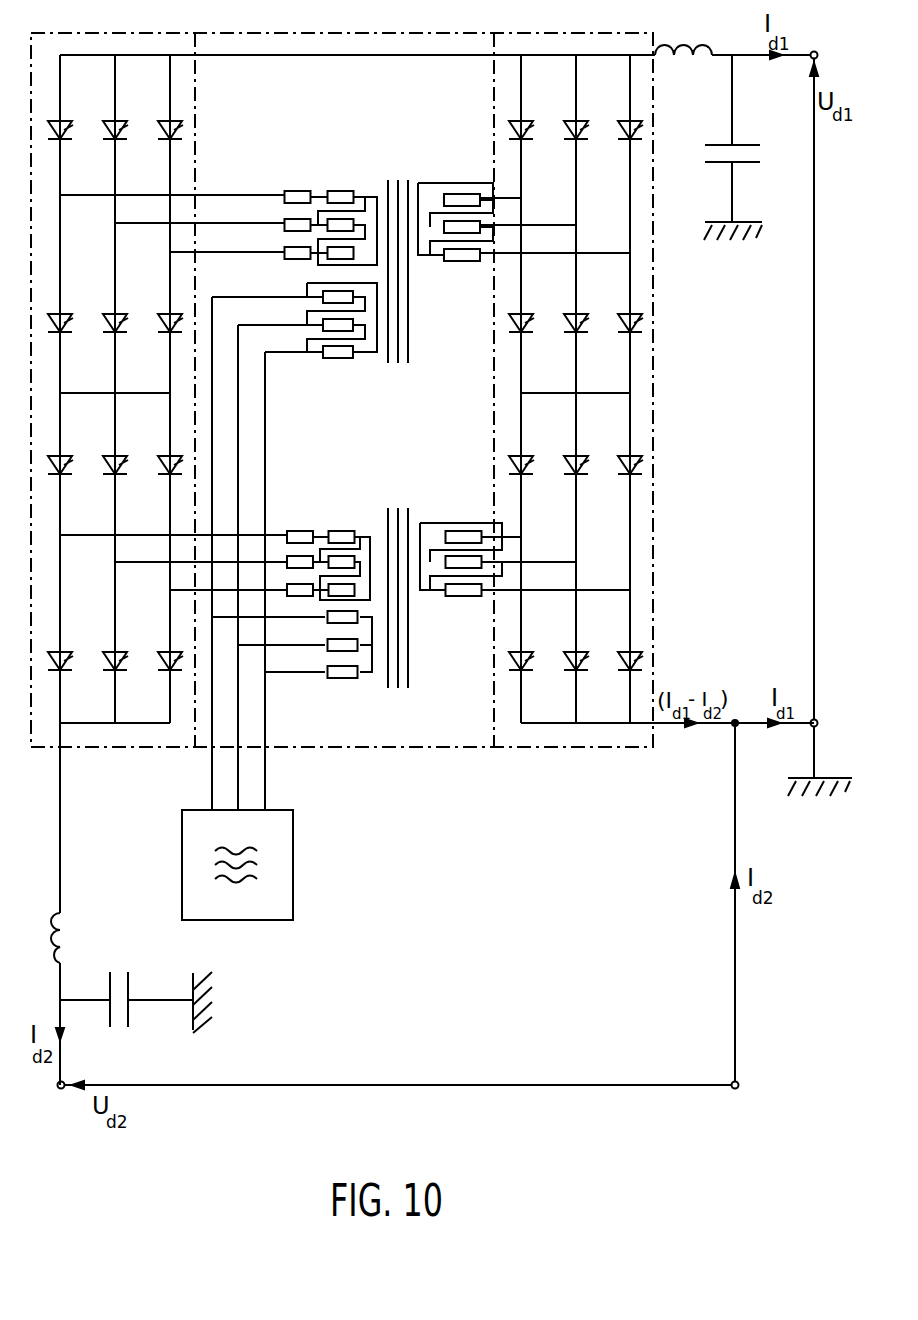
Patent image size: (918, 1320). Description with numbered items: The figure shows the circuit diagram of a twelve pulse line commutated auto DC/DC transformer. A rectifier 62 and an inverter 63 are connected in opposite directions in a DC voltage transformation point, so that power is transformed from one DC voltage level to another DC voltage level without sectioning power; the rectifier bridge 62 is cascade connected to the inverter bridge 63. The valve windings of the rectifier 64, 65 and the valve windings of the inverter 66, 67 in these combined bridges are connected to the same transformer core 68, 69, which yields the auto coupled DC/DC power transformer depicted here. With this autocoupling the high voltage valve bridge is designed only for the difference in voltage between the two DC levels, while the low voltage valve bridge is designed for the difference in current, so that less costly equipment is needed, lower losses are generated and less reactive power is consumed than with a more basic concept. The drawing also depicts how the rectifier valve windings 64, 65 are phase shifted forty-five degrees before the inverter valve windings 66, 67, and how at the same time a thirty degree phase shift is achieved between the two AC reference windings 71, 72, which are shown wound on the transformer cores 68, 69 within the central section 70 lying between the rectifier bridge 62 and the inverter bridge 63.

The rectifier 62 is at (117, 33).
The inverter 63 is at (590, 33).
The rectifier valve winding 64 is at (346, 260).
The rectifier valve winding 65 is at (350, 592).
The inverter valve winding 66 is at (452, 258).
The inverter valve winding 67 is at (455, 593).
The transformer core 68 is at (385, 186).
The transformer core 69 is at (384, 516).
The firing pulse generating unit 70 is at (373, 32).
The AC reference winding 71 is at (342, 292).
The primary control windings 72 is at (343, 608).